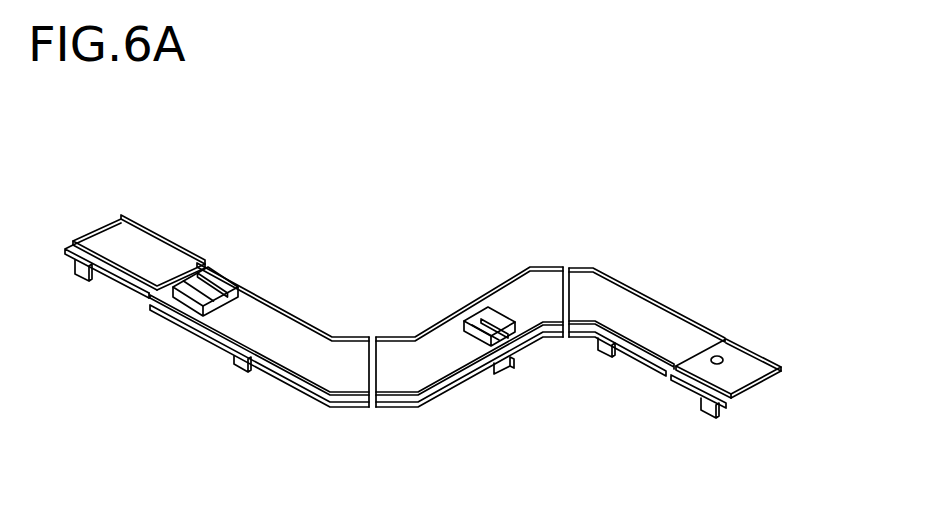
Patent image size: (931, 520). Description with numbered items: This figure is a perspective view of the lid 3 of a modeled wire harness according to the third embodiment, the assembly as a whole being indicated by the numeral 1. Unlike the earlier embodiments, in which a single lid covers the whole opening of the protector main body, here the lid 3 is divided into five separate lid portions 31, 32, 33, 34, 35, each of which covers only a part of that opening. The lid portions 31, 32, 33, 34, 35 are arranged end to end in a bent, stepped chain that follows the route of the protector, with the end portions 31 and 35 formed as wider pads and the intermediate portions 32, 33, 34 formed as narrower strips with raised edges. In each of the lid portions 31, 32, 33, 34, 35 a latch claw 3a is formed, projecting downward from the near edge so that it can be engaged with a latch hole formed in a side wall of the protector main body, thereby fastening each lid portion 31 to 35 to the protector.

The power storage device 1 is at (719, 247).
The lid 3 is at (270, 307).
The latch claw 3a is at (80, 277).
The lid portion 31 is at (153, 250).
The lid portion 32 is at (313, 342).
The lid portion 33 is at (515, 290).
The lid portion 34 is at (628, 305).
The lid portion 35 is at (747, 365).